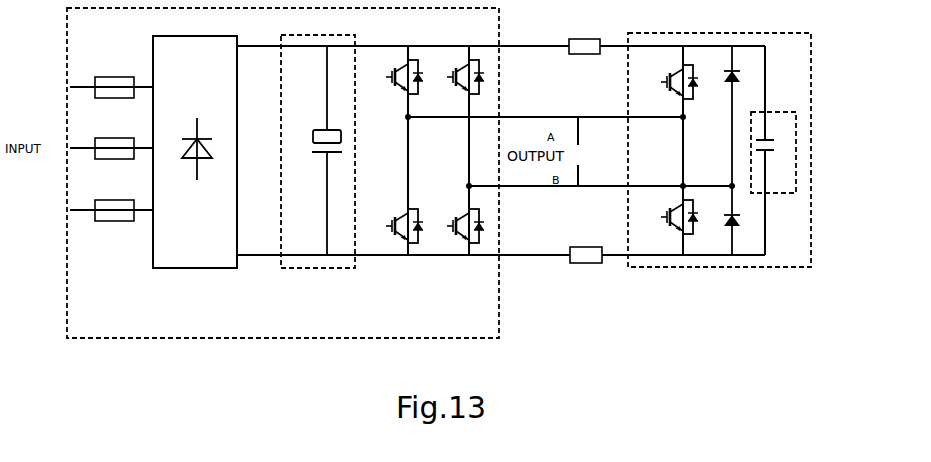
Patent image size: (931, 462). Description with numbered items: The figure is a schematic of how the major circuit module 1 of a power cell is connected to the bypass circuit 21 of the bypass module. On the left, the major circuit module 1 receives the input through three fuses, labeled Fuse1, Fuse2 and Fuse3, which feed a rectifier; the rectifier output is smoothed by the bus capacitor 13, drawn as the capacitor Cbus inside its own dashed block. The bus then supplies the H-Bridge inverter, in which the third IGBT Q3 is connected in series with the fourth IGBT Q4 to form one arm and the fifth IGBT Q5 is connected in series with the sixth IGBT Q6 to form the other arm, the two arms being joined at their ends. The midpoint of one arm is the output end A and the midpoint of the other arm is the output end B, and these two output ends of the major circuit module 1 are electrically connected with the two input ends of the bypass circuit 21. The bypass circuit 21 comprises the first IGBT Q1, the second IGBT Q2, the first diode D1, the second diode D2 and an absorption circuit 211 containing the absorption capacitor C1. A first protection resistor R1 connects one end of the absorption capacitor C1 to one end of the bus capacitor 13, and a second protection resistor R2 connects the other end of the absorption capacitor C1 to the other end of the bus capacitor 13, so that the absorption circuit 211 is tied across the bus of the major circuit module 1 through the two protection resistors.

The major circuit module 1 is at (110, 338).
The bus capacitor 13 is at (280, 214).
The bypass circuit 21 is at (748, 184).
The absorption circuit 211 is at (809, 153).
The first IGBT Q1 is at (670, 82).
The second IGBT Q2 is at (671, 217).
The third IGBT Q3 is at (398, 92).
The fourth IGBT Q4 is at (399, 213).
The fifth IGBT Q5 is at (455, 78).
The sixth IGBT Q6 is at (456, 217).
The first diode D1 is at (724, 116).
The second diode D2 is at (723, 220).
The first protection resistor R1 is at (572, 38).
The second protection resistor R2 is at (575, 247).
The absorption capacitor C1 is at (773, 150).
The bus capacitor Cbus is at (316, 150).
The fuse 1 Fuse1 is at (111, 81).
The fuse 2 Fuse2 is at (111, 142).
The fuse 3 Fuse3 is at (111, 204).